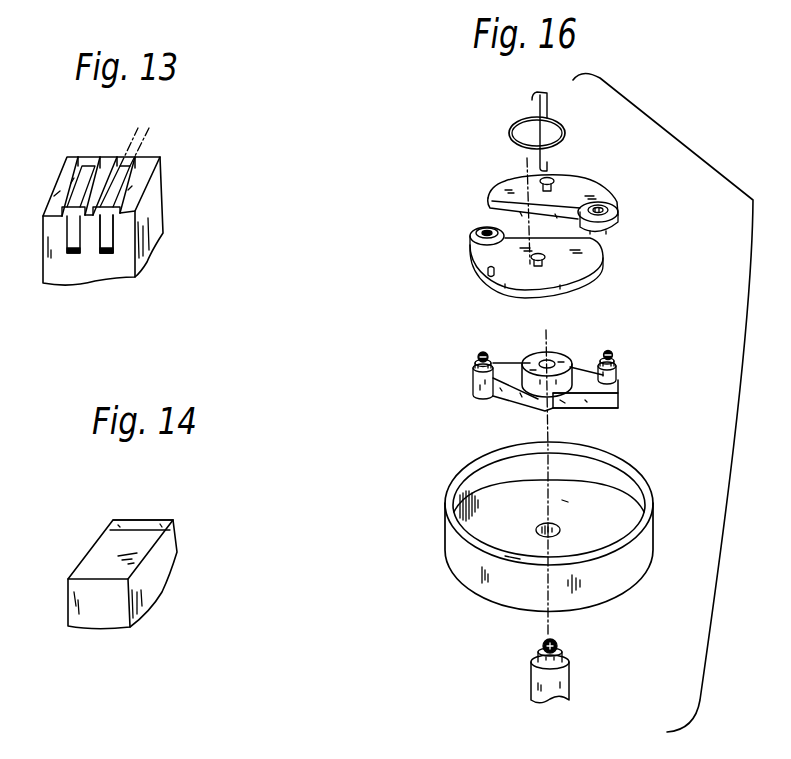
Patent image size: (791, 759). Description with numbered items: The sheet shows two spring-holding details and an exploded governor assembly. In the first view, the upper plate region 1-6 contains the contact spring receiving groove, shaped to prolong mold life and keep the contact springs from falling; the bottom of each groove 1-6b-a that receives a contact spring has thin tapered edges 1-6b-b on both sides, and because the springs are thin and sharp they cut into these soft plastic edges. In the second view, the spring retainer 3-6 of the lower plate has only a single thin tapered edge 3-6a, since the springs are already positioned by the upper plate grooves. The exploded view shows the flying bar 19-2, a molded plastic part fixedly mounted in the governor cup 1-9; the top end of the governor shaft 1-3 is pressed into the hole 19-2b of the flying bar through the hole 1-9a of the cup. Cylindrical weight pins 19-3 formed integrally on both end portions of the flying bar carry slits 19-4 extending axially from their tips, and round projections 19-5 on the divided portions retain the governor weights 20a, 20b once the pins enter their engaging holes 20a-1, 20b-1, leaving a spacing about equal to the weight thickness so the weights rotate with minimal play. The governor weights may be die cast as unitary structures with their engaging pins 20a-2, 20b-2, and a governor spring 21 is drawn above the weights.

In FIG. 13, the upper plate groove region 1-6 is at (97, 158).
In FIG. 13, the groove 1-6b-a is at (118, 135).
In FIG. 13, the thin tapered edges 1-6b-b is at (106, 254).
In FIG. 14, the spring retainer 3-6 is at (100, 557).
In FIG. 14, the thin tapered edge 3-6a is at (152, 518).
In FIG. 16, the governor spring 21 is at (488, 132).
In FIG. 16, the governor weight 20a is at (587, 186).
In FIG. 16, the engaging hole 20a-1 is at (658, 227).
In FIG. 16, the engaging pin 20a-2 is at (553, 182).
In FIG. 16, the governor weight 20b is at (588, 255).
In FIG. 16, the engaging hole 20b-1 is at (476, 235).
In FIG. 16, the engaging pin 20b-2 is at (546, 262).
In FIG. 16, the flying bar 19-2 is at (514, 397).
In FIG. 16, the hole 19-2b is at (565, 400).
In FIG. 16, the weight pins 19-3 is at (477, 388).
In FIG. 16, the slits 19-4 is at (486, 353).
In FIG. 16, the round projections 19-5 is at (472, 369).
In FIG. 16, the governor cup 1-9 is at (422, 573).
In FIG. 16, the hole 1-9a is at (556, 524).
In FIG. 16, the governor shaft 1-3 is at (602, 686).